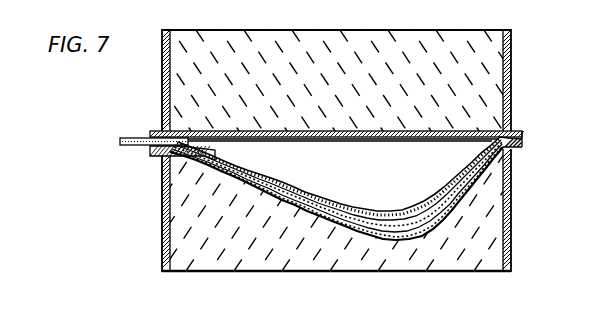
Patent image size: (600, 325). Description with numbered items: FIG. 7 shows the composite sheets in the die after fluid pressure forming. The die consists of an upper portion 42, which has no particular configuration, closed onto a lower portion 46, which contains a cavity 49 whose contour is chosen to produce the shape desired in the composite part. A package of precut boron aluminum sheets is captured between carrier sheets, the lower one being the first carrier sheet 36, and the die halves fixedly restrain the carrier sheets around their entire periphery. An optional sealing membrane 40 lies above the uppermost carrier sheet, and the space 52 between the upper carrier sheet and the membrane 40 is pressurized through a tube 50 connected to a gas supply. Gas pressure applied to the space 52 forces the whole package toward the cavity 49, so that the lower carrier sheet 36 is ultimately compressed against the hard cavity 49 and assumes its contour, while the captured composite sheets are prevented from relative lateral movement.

The upper portion 42 is at (363, 29).
The sealing membrane 40 is at (367, 137).
The tube 50 is at (138, 136).
The first carrier sheet 36 is at (257, 174).
The space 52 is at (412, 189).
The lower portion 46 is at (355, 266).
The cavity 49 is at (413, 242).